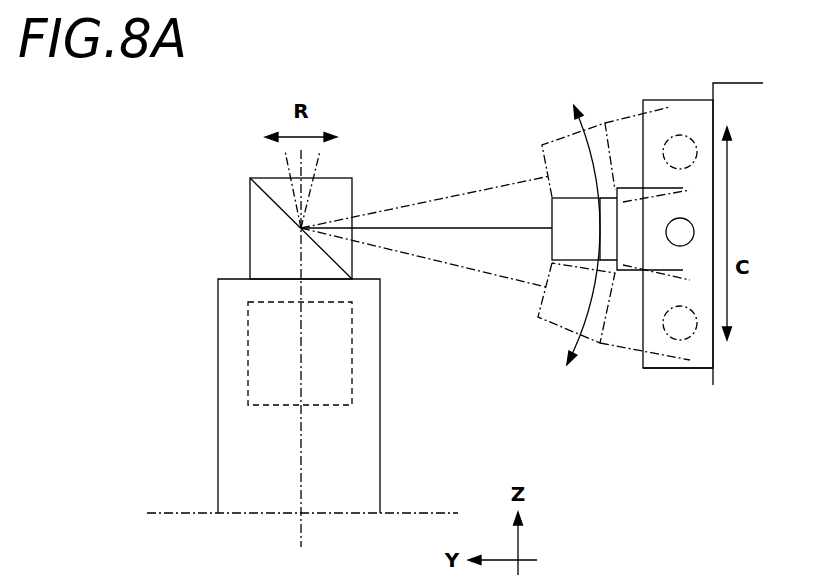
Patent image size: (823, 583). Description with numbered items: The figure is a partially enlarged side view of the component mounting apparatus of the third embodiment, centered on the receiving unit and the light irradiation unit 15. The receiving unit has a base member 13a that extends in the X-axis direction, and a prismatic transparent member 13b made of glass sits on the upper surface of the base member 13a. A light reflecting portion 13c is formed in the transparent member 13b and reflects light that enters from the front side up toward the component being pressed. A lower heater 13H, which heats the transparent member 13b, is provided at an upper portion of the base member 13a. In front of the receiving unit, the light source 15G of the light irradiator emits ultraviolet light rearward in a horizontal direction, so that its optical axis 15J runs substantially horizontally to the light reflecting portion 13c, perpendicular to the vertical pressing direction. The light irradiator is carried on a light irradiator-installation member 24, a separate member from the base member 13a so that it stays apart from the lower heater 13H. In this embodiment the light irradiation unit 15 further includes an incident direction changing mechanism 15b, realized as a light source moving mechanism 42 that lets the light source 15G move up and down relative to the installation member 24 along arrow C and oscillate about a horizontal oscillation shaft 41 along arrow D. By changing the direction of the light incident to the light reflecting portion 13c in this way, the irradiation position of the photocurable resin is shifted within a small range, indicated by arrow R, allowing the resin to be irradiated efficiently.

The base member 13a is at (233, 445).
The transparent member 13b is at (333, 187).
The light reflecting portion 13c is at (274, 203).
The lower heater 13H is at (260, 348).
The light irradiation unit 15 is at (568, 182).
The light source 15G is at (562, 245).
The optical axis 15J is at (442, 228).
The incident direction changing mechanism 15b is at (675, 383).
The light irradiator-installation member 24 is at (741, 92).
The horizontal oscillation shaft 41 is at (691, 222).
The light source moving mechanism 42 is at (683, 108).